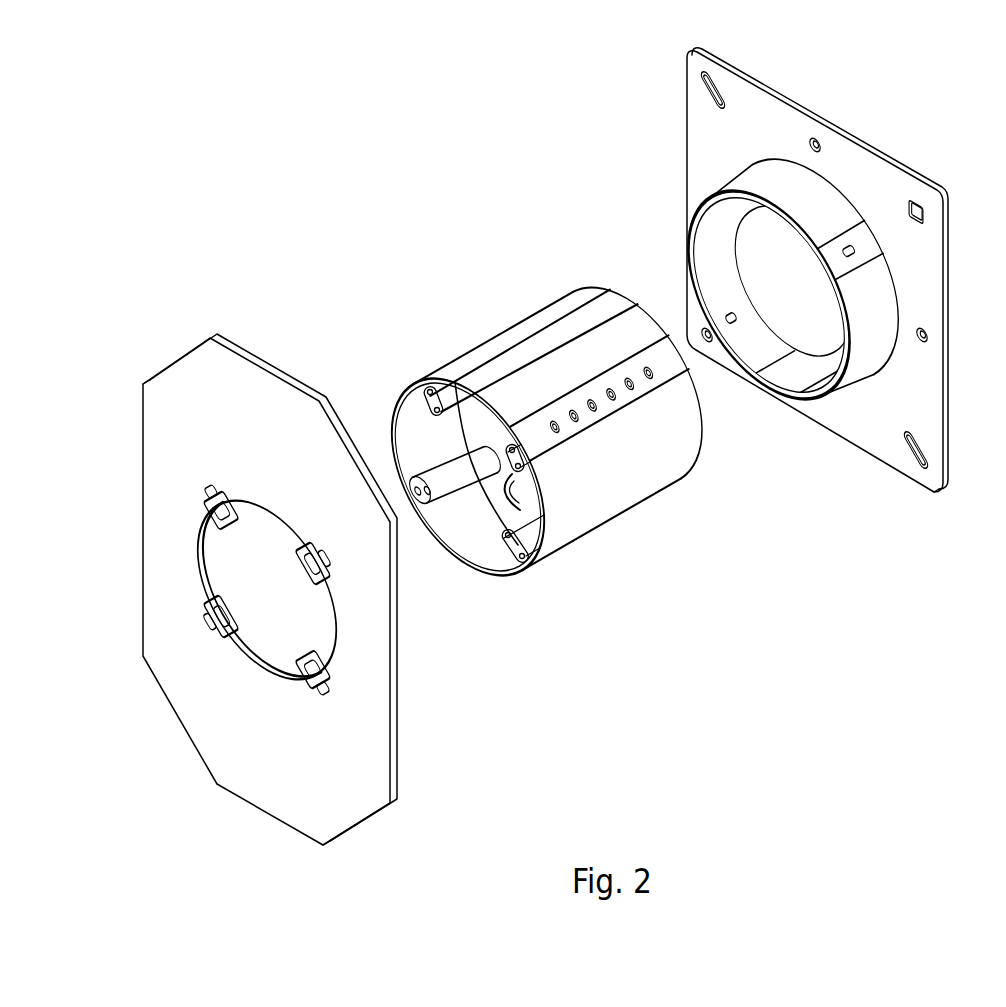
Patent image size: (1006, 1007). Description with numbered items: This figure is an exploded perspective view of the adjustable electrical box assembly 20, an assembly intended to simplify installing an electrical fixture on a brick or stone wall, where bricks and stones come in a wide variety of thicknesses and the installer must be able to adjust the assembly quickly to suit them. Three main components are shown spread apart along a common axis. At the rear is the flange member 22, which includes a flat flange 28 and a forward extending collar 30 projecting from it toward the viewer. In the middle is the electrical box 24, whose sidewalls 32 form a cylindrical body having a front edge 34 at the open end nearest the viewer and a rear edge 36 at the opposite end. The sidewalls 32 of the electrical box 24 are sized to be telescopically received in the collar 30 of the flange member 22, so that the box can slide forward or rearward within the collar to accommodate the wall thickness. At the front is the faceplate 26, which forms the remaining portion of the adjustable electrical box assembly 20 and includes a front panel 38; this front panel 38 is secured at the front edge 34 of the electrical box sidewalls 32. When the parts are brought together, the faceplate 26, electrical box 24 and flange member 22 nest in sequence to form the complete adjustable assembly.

The adjustable electrical box assembly 20 is at (162, 169).
The flange member 22 is at (607, 77).
The electrical box 24 is at (445, 317).
The faceplate 26 is at (107, 484).
The flange 28 is at (888, 198).
The collar 30 is at (883, 325).
The sidewalls 32 is at (626, 468).
The front edge 34 is at (467, 562).
The rear edge 36 is at (702, 425).
The front panel 38 is at (273, 443).